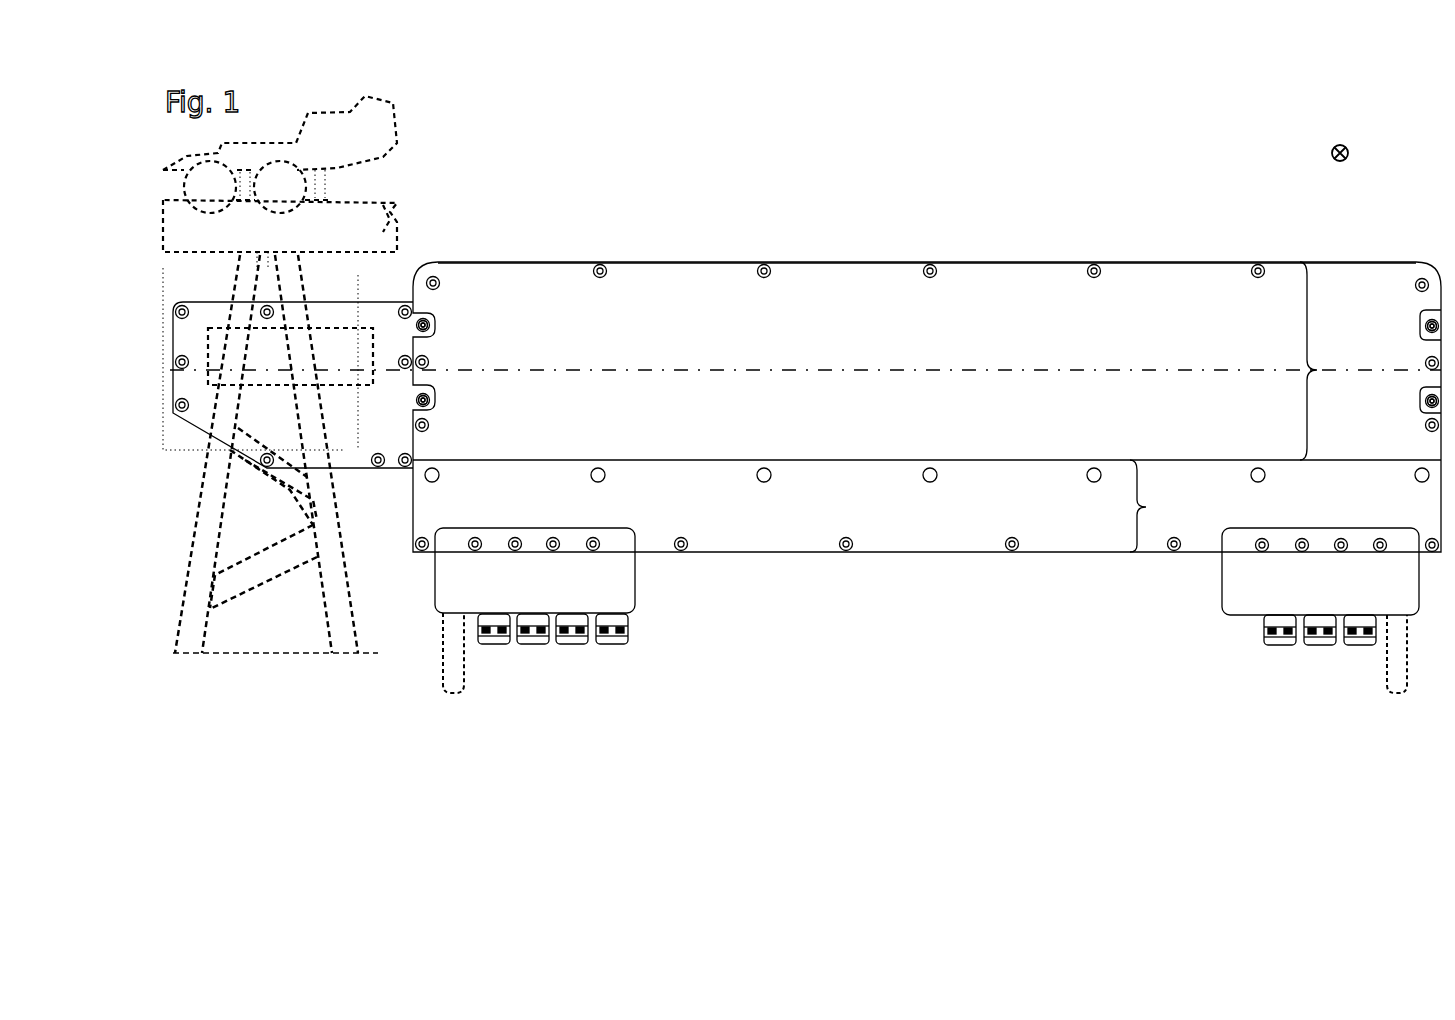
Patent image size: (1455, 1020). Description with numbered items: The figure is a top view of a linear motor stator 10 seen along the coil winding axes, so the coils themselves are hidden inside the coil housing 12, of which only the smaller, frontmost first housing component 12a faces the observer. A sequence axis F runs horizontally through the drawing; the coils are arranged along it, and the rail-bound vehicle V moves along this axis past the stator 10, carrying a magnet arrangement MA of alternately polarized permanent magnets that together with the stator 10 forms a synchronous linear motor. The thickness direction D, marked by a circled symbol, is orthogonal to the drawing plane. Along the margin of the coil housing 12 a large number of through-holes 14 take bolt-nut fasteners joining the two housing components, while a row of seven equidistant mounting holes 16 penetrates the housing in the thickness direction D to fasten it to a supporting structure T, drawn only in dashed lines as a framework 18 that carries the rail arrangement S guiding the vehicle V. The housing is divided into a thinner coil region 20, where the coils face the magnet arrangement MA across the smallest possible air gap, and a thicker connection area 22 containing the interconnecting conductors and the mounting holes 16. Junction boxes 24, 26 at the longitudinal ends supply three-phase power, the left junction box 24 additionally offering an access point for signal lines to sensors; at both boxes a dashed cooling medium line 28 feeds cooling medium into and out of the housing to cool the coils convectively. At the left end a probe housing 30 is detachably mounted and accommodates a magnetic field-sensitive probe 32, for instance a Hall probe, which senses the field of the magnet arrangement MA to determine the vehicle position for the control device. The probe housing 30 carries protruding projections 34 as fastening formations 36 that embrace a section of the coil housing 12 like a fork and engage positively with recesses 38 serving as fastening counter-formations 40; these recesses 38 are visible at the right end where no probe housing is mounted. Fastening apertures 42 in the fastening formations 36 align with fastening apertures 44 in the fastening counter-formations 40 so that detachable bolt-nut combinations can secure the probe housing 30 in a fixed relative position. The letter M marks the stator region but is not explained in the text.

The linear motor stator 10 is at (494, 165).
The coil housing 12 is at (645, 180).
The first housing component 12a is at (845, 275).
The through-holes 14 is at (605, 268).
The mounting holes 16 is at (1094, 480).
The framework 18 is at (328, 527).
The coil region 20 is at (1321, 361).
The connection area 22 is at (1150, 506).
The junction box 24 is at (610, 582).
The junction box 26 is at (1245, 588).
The cooling medium line 28 is at (450, 660).
The probe housing 30 is at (293, 385).
The probe 32 is at (360, 388).
The projections 34 is at (432, 322).
The fastening formations 36 is at (460, 310).
The recesses 38 is at (1428, 325).
The fastening counter-formations 40 is at (1420, 315).
The fastening apertures 42 is at (428, 330).
The fastening apertures 44 is at (1428, 326).
The vehicle V is at (360, 148).
The rail arrangement S is at (365, 199).
The magnet arrangement MA is at (360, 293).
The module M is at (564, 223).
The supporting structure T is at (245, 700).
The thickness direction D is at (1330, 153).
The sequence axis F is at (722, 368).